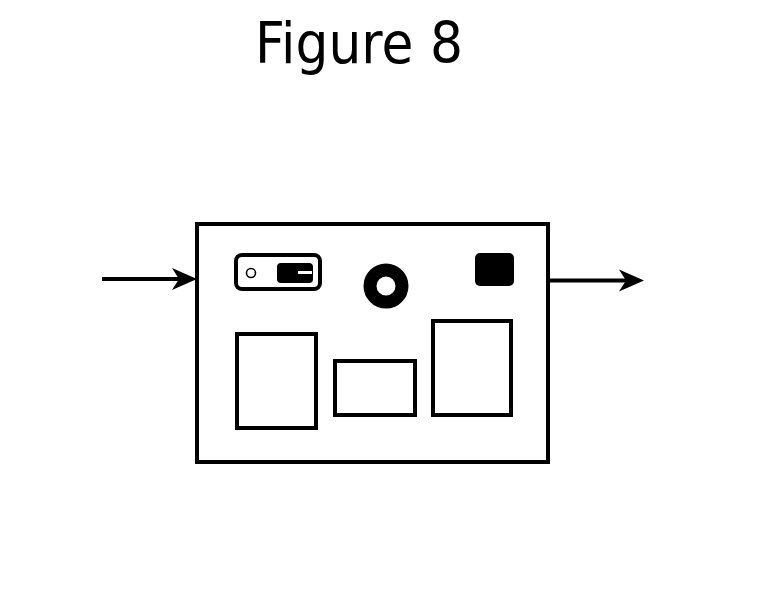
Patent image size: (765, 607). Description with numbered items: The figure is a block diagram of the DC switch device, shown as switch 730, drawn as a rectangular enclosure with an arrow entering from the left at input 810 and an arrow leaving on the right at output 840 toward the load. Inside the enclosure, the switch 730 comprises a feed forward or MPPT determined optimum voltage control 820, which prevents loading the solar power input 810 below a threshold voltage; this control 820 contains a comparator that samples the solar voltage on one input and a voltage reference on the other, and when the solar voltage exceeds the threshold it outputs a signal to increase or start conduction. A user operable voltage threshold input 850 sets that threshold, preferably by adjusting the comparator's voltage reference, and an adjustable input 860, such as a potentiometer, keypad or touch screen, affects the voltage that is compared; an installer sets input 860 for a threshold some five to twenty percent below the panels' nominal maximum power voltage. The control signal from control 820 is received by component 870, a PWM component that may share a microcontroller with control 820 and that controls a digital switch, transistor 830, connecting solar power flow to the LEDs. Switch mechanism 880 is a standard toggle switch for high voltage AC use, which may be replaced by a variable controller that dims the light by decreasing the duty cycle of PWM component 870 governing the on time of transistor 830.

The switch 730 is at (450, 197).
The input 810 is at (112, 276).
The feed forward control 820 is at (268, 399).
The transistor 830 is at (562, 217).
The output 840 is at (632, 278).
The user operable voltage threshold input 850 is at (367, 400).
The input 860 is at (383, 264).
The component 870 is at (477, 400).
The switch mechanism 880 is at (260, 256).